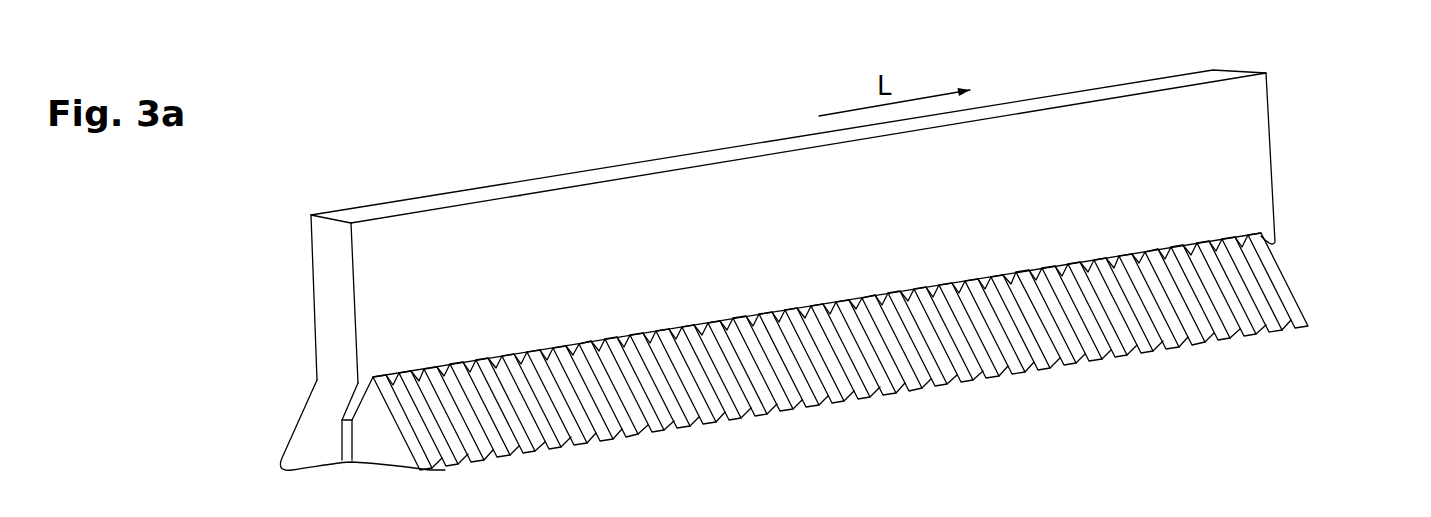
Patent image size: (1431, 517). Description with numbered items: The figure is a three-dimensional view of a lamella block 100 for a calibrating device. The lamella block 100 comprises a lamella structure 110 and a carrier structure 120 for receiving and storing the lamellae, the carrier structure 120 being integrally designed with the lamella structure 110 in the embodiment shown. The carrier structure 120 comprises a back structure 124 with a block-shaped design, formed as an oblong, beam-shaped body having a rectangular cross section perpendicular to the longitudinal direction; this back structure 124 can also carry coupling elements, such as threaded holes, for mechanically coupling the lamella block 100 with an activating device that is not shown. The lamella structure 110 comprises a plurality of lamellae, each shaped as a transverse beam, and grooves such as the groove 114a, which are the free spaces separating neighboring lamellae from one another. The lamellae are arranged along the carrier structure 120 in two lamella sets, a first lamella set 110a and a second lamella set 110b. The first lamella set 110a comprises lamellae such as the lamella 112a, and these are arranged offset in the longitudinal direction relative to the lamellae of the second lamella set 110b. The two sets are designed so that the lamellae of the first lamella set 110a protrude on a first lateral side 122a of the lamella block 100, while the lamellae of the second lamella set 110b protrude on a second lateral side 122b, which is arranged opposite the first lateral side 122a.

The lamella block 100 is at (395, 173).
The lamella structure 110 is at (1300, 277).
The first lamella set 110a is at (375, 457).
The second lamella set 110b is at (308, 420).
The lamella 112a is at (422, 453).
The groove 114a is at (543, 443).
The carrier structure 120 is at (1280, 152).
The first lateral side 122a is at (375, 317).
The second lateral side 122b is at (312, 275).
The back structure 124 is at (622, 220).